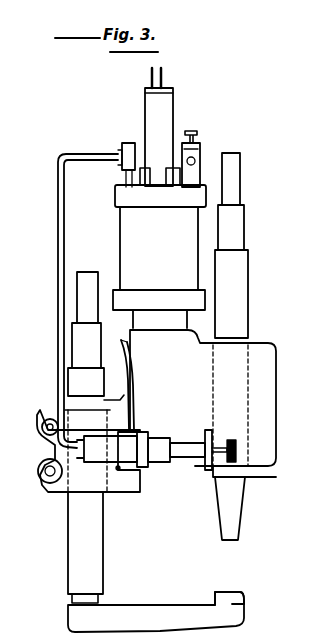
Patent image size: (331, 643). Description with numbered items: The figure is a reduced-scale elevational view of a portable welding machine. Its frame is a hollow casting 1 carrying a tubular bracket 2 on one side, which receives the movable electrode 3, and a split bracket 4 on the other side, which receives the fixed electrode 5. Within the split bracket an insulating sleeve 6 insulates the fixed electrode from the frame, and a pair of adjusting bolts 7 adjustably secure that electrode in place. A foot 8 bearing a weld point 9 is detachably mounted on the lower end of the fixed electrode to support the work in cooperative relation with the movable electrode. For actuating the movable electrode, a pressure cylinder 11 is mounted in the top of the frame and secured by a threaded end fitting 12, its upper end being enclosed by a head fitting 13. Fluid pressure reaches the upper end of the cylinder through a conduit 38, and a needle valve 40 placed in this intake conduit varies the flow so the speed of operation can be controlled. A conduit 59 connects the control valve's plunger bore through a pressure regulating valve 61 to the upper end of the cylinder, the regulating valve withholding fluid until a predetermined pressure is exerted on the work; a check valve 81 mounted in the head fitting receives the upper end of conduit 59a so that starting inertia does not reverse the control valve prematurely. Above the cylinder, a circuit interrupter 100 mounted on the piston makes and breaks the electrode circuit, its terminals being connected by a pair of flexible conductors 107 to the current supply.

The hollow casting 1 is at (134, 478).
The tubular bracket 2 is at (265, 398).
The movable electrode 3 is at (243, 272).
The split bracket 4 is at (45, 490).
The fixed electrode 5 is at (82, 297).
The insulating sleeve 6 is at (66, 497).
The adjusting bolts 7 is at (40, 466).
The foot 8 is at (150, 606).
The weld point 9 is at (232, 592).
The pressure cylinder 11 is at (119, 228).
The threaded end fitting 12 is at (110, 298).
The head fitting 13 is at (114, 201).
The conduit 38 is at (201, 155).
The needle valve 40 is at (192, 130).
The conduit 59 is at (135, 380).
The conduit 59a is at (57, 210).
The pressure regulating valve 61 is at (118, 470).
The check valve 81 is at (118, 147).
The circuit interrupter 100 is at (180, 103).
The flexible conductors 107 is at (156, 78).